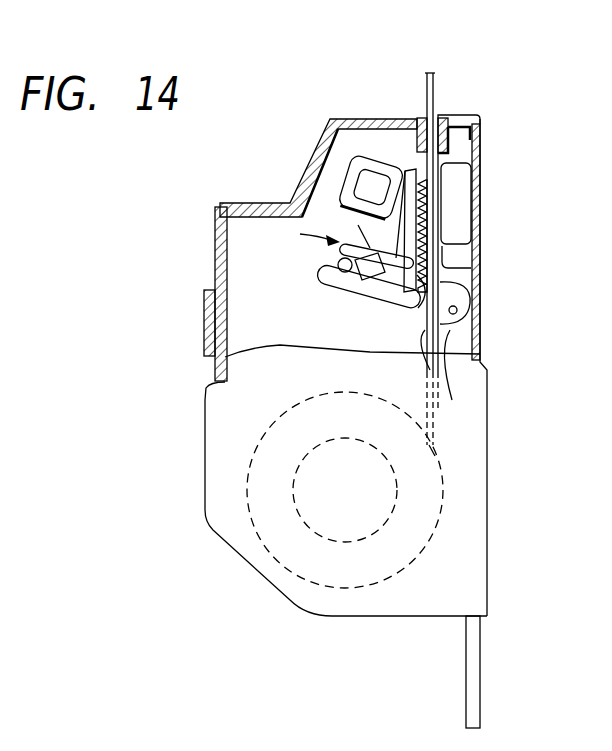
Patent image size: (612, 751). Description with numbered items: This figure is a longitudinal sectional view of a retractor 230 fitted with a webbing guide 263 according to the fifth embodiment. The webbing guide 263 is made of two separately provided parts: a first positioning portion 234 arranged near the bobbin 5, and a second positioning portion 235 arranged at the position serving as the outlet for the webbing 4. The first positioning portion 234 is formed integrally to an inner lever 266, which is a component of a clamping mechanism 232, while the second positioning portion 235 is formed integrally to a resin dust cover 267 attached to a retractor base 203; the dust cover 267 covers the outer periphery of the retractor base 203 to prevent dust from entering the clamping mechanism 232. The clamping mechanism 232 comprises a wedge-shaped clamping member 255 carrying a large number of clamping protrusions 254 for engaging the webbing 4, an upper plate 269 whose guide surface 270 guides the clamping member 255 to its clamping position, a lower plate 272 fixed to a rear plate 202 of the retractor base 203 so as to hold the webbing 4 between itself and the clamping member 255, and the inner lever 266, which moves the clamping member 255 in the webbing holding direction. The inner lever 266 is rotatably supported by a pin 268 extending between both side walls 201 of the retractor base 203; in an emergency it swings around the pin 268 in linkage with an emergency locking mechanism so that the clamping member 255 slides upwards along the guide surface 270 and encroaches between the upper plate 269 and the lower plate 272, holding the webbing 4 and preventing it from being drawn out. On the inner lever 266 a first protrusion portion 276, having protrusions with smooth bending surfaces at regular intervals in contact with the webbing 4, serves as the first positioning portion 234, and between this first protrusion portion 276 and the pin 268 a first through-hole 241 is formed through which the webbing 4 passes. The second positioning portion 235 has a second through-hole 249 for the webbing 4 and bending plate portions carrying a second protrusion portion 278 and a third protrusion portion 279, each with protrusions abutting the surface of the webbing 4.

The retractor 230 is at (192, 238).
The side walls 201 is at (232, 270).
The rear plate 202 is at (478, 330).
The retractor base 203 is at (481, 378).
The clamping mechanism 232 is at (290, 212).
The dust cover 267 is at (357, 119).
The upper plate 269 is at (344, 156).
The guide surface 270 is at (375, 200).
The second positioning portion 235 is at (393, 119).
The third protrusion portion 279 is at (426, 136).
The webbing 4 is at (435, 113).
The second protrusion portion 278 is at (441, 118).
The webbing guide 263 is at (480, 140).
The second through-hole 249 is at (470, 165).
The clamping member 255 is at (410, 196).
The lower plate 272 is at (466, 216).
The clamping protrusions 254 is at (442, 264).
The inner lever 266 is at (448, 286).
The pin 268 is at (458, 310).
The first positioning portion 234 is at (410, 302).
The first protrusion portion 276 is at (414, 322).
The first through-hole 241 is at (455, 436).
The bobbin 5 is at (392, 508).